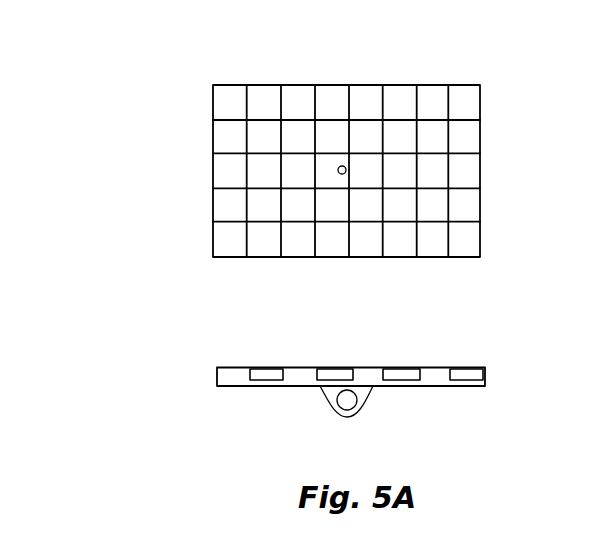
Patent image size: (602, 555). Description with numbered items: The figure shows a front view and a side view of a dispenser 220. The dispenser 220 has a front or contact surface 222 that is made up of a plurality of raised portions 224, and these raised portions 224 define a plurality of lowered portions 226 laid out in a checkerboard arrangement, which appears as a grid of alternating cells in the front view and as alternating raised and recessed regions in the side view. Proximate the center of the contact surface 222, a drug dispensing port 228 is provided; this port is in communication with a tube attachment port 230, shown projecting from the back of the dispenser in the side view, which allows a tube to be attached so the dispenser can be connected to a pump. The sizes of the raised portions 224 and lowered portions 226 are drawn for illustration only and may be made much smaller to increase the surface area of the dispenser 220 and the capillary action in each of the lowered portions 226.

The dispenser 220 is at (128, 186).
The contact surface 222 is at (402, 97).
The raised portions 224 is at (227, 100).
The lowered portions 226 is at (263, 97).
The drug dispensing port 228 is at (337, 171).
The tube attachment port 230 is at (347, 405).